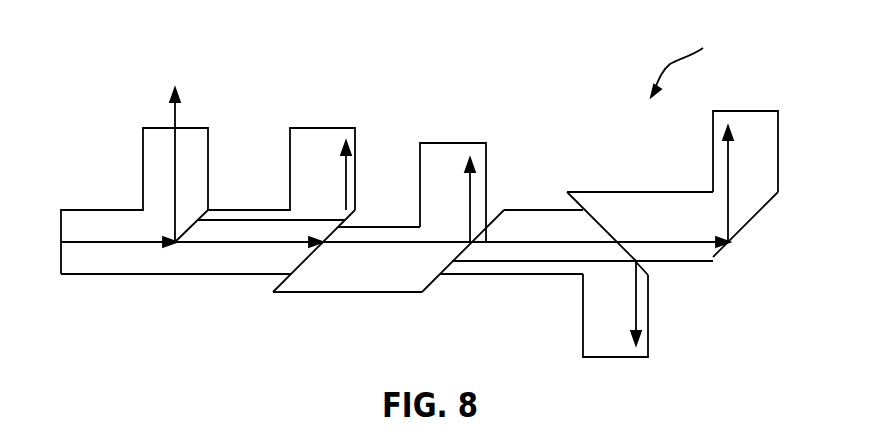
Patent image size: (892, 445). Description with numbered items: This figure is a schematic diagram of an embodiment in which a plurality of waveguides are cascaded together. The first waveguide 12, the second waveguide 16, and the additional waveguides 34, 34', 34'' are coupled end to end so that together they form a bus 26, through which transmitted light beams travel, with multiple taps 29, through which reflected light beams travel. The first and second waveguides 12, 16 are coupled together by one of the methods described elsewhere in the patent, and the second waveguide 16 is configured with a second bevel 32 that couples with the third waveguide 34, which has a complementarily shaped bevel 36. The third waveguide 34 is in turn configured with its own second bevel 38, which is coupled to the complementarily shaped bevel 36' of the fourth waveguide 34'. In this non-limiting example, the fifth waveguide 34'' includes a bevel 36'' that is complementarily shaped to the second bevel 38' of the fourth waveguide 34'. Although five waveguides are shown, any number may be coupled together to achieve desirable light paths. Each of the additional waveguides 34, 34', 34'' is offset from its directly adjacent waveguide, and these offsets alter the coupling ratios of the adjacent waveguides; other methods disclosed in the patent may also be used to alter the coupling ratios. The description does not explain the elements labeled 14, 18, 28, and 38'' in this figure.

The first waveguide 12 is at (96, 228).
The fluid flow direction 14 is at (145, 272).
The second waveguide 16 is at (203, 258).
The inner channel wall 18 is at (150, 272).
The bus 26 is at (684, 59).
The outlet section 28 is at (640, 307).
The taps 29 is at (305, 157).
The second bevel 32 is at (342, 233).
The third waveguide 34 is at (356, 300).
The bevel 36 is at (339, 290).
The second bevel 38 is at (461, 293).
The fourth waveguide 34' is at (585, 181).
The bevel 36' is at (576, 260).
The bevel 36'' is at (603, 201).
The fifth waveguide 34'' is at (640, 163).
The second bevel 38' is at (696, 284).
The sixth angled panel section 38'' is at (775, 226).